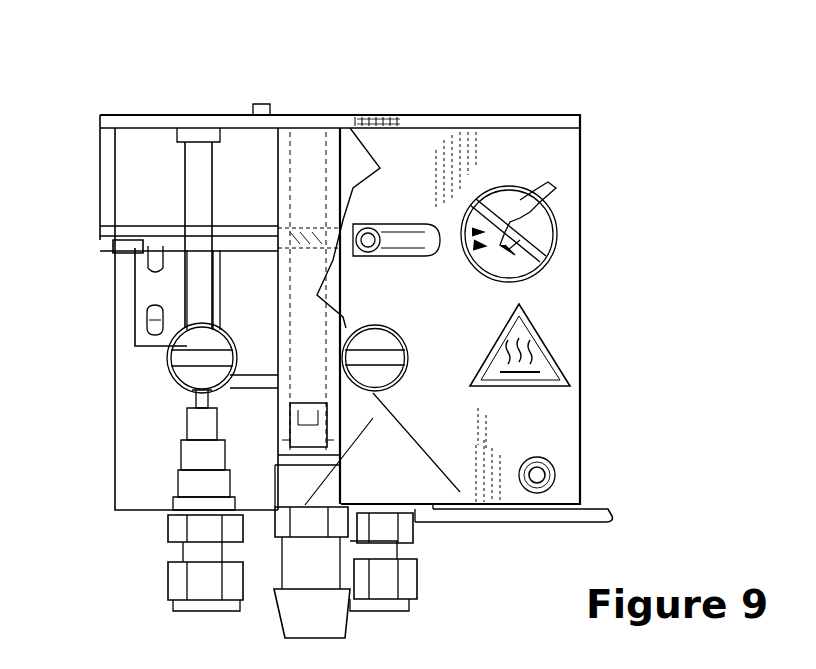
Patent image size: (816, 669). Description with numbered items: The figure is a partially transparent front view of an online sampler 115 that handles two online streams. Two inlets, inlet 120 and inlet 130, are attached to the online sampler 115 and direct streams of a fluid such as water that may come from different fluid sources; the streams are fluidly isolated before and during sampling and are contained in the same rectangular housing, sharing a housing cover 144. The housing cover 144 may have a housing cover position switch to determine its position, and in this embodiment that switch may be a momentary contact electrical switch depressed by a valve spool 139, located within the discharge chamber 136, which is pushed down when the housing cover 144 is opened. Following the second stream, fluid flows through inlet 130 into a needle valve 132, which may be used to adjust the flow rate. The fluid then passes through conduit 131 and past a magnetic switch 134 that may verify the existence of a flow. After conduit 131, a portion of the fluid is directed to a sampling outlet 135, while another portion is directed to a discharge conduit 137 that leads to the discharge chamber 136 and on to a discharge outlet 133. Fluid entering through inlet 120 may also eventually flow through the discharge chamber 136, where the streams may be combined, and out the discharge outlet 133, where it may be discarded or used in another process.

The online sampler 115 is at (70, 125).
The inlet 120 is at (372, 612).
The inlet 130 is at (165, 575).
The conduit 131 is at (202, 292).
The needle valve 132 is at (113, 403).
The discharge outlet 133 is at (282, 605).
The magnetic switch 134 is at (158, 283).
The sampling outlet 135 is at (95, 241).
The discharge chamber 136 is at (278, 158).
The discharge conduit 137 is at (247, 222).
The valve spool 139 is at (470, 526).
The housing cover 144 is at (517, 113).